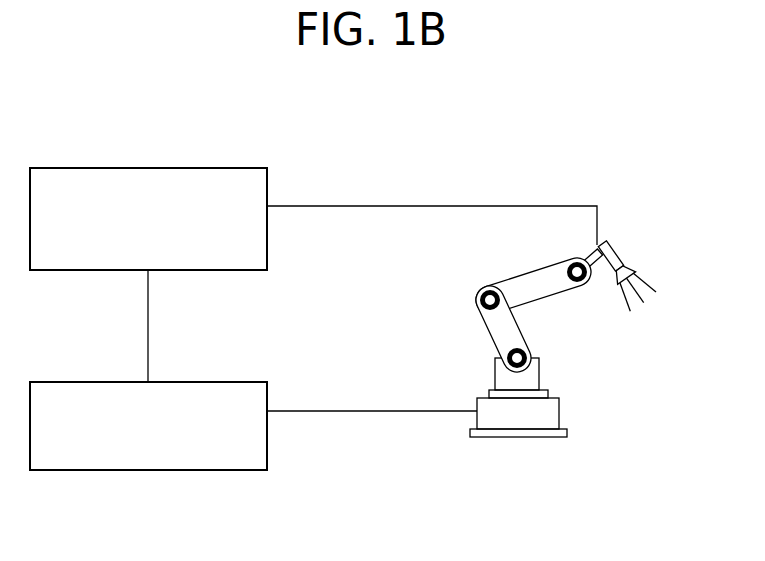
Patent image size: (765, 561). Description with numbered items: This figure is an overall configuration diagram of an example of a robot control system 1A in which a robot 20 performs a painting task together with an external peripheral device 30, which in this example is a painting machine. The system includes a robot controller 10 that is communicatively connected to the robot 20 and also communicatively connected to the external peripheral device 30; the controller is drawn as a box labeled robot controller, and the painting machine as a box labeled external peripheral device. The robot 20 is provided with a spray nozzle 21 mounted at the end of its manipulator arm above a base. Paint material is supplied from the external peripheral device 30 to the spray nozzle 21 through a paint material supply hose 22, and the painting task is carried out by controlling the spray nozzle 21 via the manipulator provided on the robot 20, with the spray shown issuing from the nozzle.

The robot system 1A is at (650, 143).
The robot controller 10 is at (177, 382).
The robot 20 is at (560, 400).
The spray nozzle 21 is at (625, 262).
The paint material supply hose 22 is at (385, 206).
The external peripheral device 30 is at (180, 168).